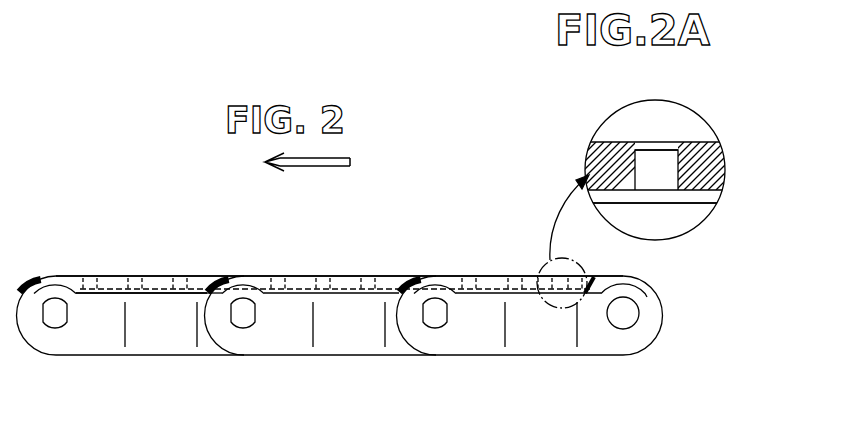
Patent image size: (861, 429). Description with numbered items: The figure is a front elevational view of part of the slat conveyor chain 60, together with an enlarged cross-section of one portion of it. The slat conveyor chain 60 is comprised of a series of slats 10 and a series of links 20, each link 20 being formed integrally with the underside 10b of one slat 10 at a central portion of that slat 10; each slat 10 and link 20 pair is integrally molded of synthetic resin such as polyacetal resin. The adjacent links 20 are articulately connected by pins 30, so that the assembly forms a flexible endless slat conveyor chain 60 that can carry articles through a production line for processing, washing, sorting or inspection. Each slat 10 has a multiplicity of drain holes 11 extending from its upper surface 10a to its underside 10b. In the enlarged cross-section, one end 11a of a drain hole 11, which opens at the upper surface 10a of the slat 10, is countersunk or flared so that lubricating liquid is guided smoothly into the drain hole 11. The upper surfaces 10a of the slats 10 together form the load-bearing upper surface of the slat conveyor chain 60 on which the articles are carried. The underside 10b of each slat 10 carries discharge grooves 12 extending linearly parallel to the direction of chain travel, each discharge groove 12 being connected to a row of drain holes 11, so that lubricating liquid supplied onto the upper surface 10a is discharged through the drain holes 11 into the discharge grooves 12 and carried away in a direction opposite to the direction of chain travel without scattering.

In FIG. 2, the slat 10 is at (326, 277).
In FIG. 2A, the slat 10 is at (590, 160).
In FIG. 2, the upper surface 10a is at (258, 275).
In FIG. 2A, the upper surface 10a is at (697, 141).
In FIG. 2, the underside 10b is at (496, 290).
In FIG. 2A, the underside 10b is at (680, 204).
In FIG. 2, the drain hole 11 is at (90, 282).
In FIG. 2A, the drain hole 11 is at (650, 157).
In FIG. 2A, the end of drain hole 11a is at (670, 148).
In FIG. 2, the discharge groove 12 is at (203, 274).
In FIG. 2, the link 20 is at (157, 345).
In FIG. 2, the pin 30 is at (55, 318).
In FIG. 2, the slat conveyor chain 60 is at (417, 266).